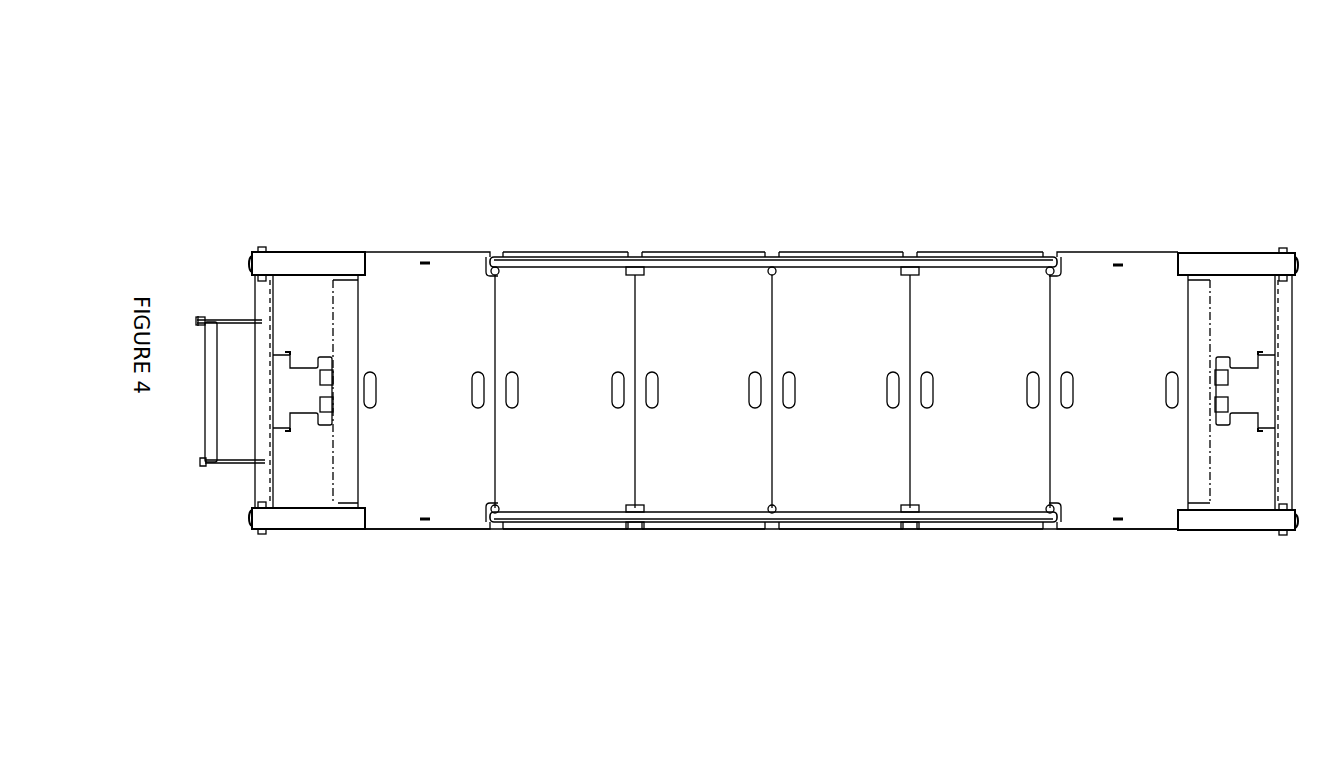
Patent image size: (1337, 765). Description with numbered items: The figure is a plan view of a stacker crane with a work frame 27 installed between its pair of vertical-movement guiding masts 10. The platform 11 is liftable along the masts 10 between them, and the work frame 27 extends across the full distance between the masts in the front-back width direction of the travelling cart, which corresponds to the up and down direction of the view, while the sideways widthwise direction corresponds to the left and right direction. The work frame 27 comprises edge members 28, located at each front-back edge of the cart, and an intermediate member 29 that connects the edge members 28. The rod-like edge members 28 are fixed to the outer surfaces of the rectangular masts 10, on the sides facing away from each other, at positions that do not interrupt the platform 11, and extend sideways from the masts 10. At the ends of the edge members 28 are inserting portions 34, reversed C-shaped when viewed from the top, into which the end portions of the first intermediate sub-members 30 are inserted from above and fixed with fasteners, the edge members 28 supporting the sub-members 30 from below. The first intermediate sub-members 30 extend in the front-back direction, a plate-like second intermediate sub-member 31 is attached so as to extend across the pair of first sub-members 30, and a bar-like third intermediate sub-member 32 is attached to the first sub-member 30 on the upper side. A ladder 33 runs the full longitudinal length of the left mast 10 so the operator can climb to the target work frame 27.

The vertical-movement guiding mast 10 is at (315, 415).
The platform 11 is at (333, 317).
The work frame 27 is at (935, 164).
The edge member 28 is at (263, 473).
The intermediate member 29 is at (815, 530).
The first intermediate sub-member 30 is at (343, 260).
The second plate-like intermediate sub-member 31 is at (452, 523).
The third bar-like intermediate sub-member 32 is at (825, 265).
The ladder 33 is at (215, 320).
The inserting portion 34 is at (250, 265).